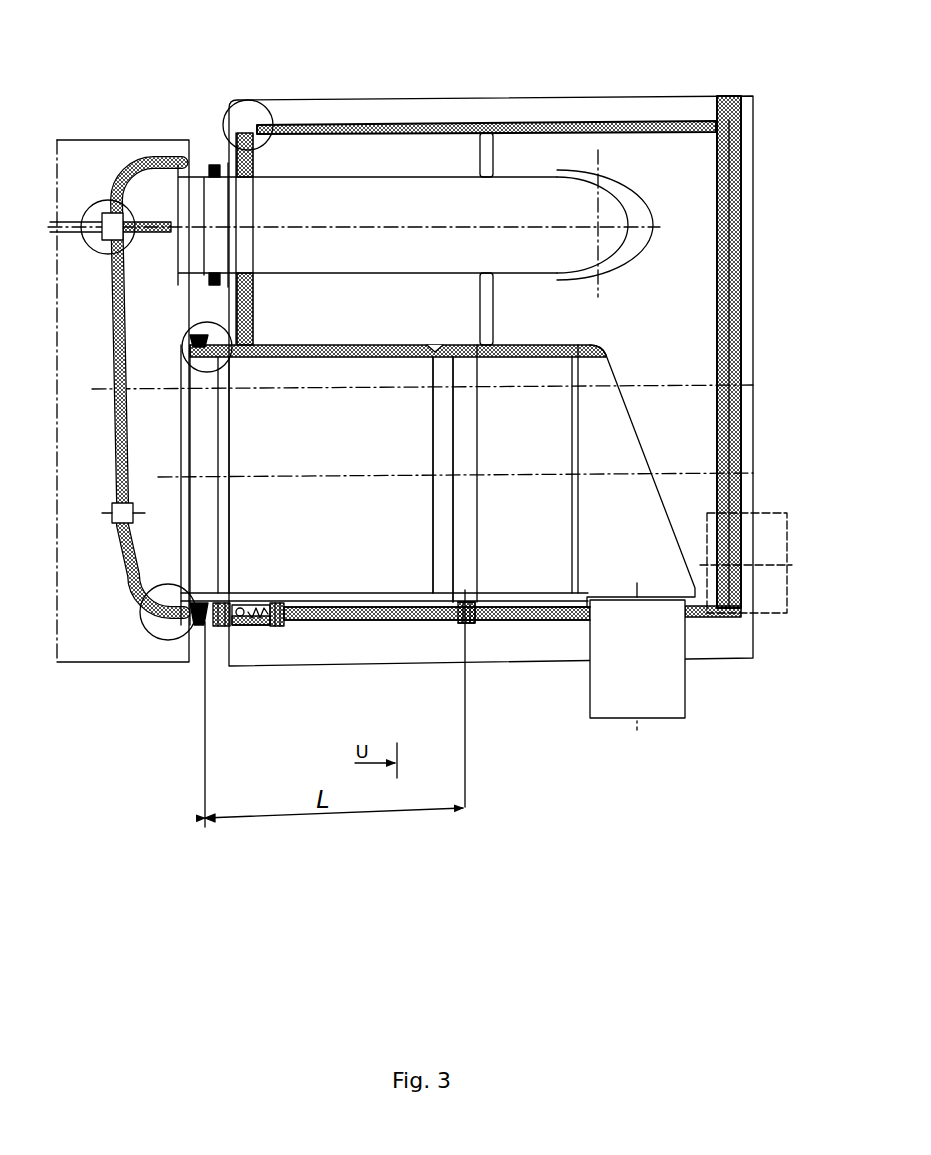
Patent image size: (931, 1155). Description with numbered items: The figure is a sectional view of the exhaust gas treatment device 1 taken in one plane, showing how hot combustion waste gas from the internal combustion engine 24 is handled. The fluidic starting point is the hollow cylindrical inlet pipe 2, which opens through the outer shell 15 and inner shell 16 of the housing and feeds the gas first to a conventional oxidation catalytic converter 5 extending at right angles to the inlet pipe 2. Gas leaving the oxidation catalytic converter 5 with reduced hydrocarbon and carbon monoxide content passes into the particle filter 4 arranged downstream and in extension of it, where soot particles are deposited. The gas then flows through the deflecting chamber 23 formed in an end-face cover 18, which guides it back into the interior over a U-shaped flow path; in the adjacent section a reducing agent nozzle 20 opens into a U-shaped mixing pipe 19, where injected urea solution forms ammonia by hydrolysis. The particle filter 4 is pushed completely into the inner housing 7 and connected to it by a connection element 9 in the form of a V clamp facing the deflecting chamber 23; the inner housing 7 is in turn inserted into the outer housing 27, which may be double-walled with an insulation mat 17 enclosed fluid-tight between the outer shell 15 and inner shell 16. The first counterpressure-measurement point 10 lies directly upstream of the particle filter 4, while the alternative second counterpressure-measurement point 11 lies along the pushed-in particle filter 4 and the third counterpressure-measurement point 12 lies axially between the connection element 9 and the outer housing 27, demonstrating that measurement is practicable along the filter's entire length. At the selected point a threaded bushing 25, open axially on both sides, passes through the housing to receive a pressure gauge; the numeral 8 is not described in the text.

The exhaust gas treatment device 1 is at (147, 40).
The inlet pipe 2 is at (663, 675).
The particle filter 4 is at (283, 582).
The oxidation catalytic converter 5 is at (533, 497).
The inner housing 7 is at (425, 617).
The bypass line 8 is at (180, 375).
The connection element 9 is at (203, 333).
The first counterpressure-measurement point 10 is at (478, 626).
The second counterpressure-measurement point 11 is at (289, 629).
The third counterpressure-measurement point 12 is at (237, 631).
The outer shell 15 is at (360, 617).
The inner shell 16 is at (402, 617).
The insulation mat 17 is at (277, 122).
The end-face cover 18 is at (122, 537).
The U-shaped mixing pipe 19 is at (223, 208).
The reducing agent nozzle 20 is at (112, 203).
The deflecting chamber 23 is at (125, 560).
The internal combustion engine 24 is at (700, 69).
The bushing 25 is at (213, 625).
The outer housing 27 is at (566, 628).